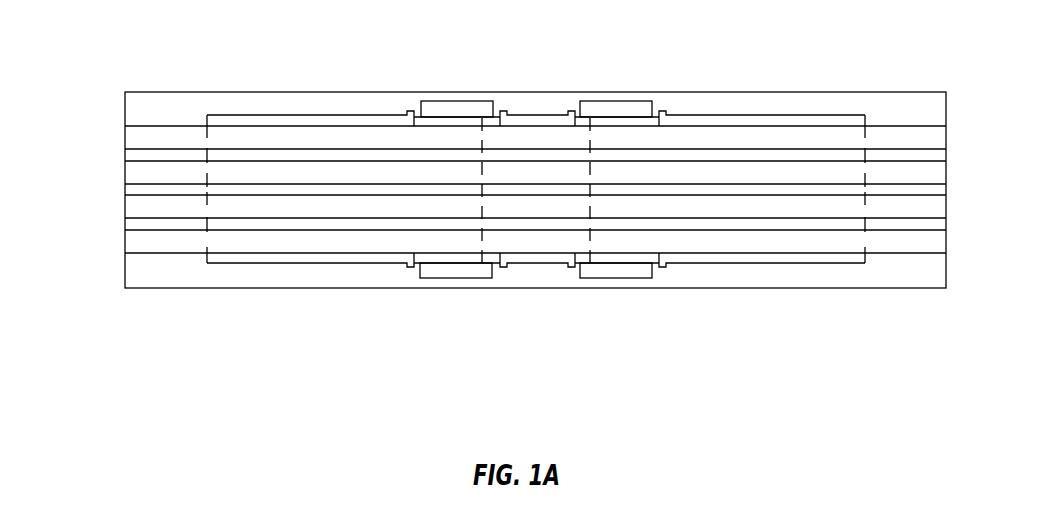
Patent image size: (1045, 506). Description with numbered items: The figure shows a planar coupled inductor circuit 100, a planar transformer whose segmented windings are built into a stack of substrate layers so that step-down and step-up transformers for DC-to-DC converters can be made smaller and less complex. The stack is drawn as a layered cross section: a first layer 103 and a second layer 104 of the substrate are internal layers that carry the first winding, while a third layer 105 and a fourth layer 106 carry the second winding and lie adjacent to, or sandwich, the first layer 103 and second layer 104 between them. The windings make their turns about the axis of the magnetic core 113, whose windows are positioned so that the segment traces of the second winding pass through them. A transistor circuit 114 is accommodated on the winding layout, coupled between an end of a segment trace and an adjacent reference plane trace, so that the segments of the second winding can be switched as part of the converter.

The planar coupled inductor circuit 100 is at (211, 44).
The first layer 103 is at (125, 172).
The second layer 104 is at (125, 207).
The third layer 105 is at (125, 138).
The fourth layer 106 is at (125, 242).
The magnetic core 113 is at (775, 102).
The transistor circuit 114 is at (455, 110).